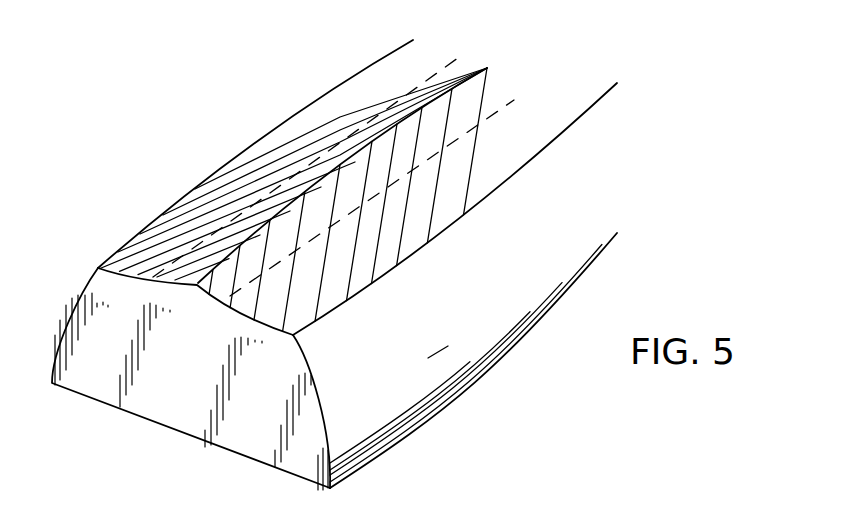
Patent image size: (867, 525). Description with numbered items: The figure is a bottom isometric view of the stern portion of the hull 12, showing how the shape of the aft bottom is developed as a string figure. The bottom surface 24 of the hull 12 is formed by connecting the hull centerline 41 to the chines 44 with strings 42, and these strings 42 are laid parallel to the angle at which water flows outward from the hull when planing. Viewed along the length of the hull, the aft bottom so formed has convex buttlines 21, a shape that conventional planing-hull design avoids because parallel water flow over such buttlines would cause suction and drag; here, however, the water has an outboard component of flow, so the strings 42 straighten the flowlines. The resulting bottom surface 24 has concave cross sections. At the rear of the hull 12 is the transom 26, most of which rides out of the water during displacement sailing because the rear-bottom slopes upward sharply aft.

The hull 12 is at (447, 411).
The convex buttlines 21 is at (515, 98).
The bottom surface 24 is at (176, 222).
The transom 26 is at (183, 402).
The hull centerline 41 is at (488, 67).
The strings 42 is at (443, 170).
The chines 44 is at (253, 143).